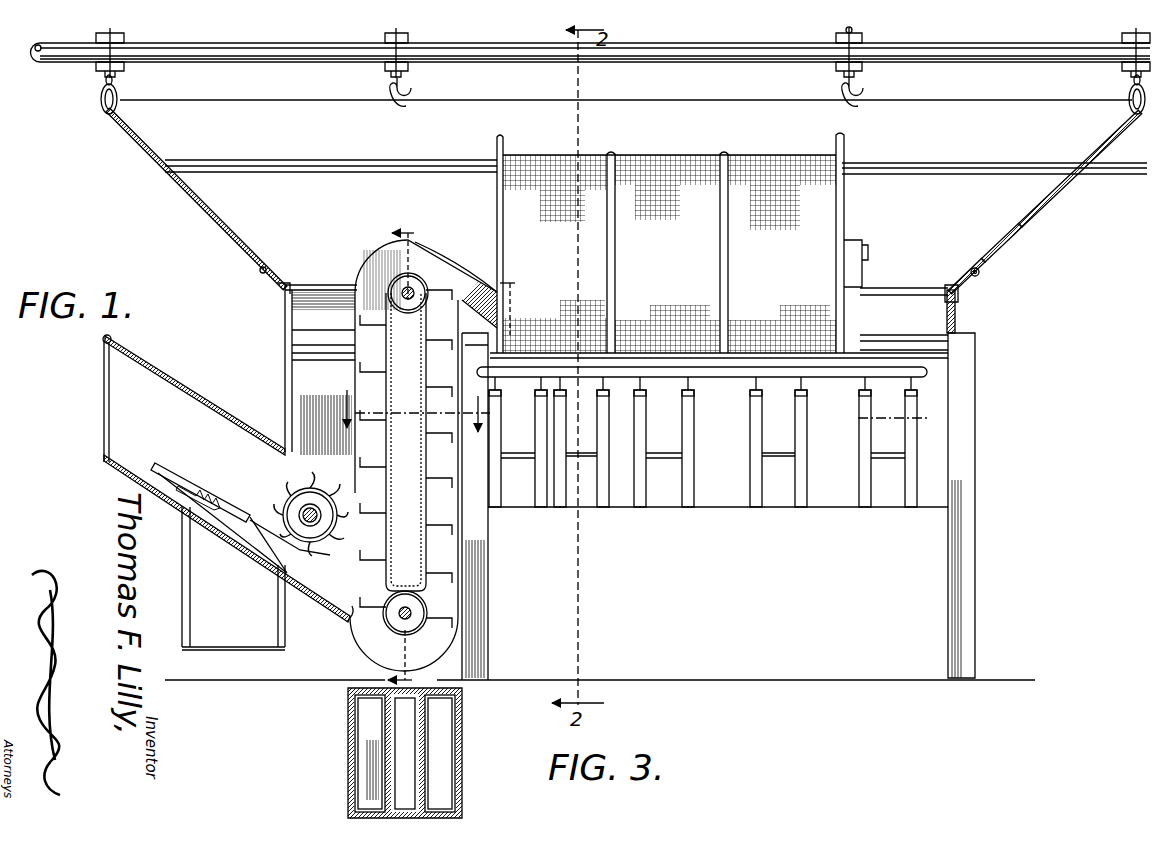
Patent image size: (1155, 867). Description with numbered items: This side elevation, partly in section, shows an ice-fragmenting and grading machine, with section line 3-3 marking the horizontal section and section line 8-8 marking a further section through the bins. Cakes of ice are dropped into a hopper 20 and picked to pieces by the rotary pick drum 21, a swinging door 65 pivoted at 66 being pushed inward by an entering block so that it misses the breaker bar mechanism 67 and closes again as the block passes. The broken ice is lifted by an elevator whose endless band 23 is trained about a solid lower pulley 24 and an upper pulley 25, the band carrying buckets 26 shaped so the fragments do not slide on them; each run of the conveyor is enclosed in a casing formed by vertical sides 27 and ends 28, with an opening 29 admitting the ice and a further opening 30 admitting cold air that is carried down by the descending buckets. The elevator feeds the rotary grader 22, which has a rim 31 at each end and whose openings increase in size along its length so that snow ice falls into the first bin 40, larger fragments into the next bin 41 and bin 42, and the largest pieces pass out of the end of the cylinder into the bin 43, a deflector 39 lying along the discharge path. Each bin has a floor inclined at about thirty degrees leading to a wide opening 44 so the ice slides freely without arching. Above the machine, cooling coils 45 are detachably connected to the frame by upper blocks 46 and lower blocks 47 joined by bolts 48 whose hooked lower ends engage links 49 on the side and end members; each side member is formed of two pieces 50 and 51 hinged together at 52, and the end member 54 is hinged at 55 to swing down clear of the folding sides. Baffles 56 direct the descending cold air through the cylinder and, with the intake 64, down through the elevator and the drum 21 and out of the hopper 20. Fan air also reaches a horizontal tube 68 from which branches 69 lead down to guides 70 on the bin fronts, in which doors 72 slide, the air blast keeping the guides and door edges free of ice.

In FIG. 1, the section line 3- 3 is at (408, 402).
In FIG. 1, the section line 8- 8 is at (893, 410).
In FIG. 1, the hopper 20 is at (166, 496).
In FIG. 1, the rotary pick drum 21 is at (296, 506).
In FIG. 1, the grader 22 is at (655, 158).
In FIG. 1, the band 23 is at (430, 552).
In FIG. 3, the band 23 is at (450, 786).
In FIG. 1, the lower pulley 24 is at (412, 632).
In FIG. 1, the pulley 25 is at (378, 244).
In FIG. 1, the buckets 26 is at (372, 600).
In FIG. 3, the buckets 26 is at (436, 764).
In FIG. 1, the vertical sides 27 is at (490, 412).
In FIG. 3, the vertical sides 27 is at (368, 740).
In FIG. 1, the ends 28 is at (370, 397).
In FIG. 3, the ends 28 is at (420, 690).
In FIG. 1, the opening 29 is at (360, 472).
In FIG. 1, the opening 30 is at (440, 258).
In FIG. 1, the rim 31 is at (496, 140).
In FIG. 1, the deflector 39 is at (512, 292).
In FIG. 1, the first bin 40 is at (545, 507).
In FIG. 1, the bin 41 is at (705, 505).
In FIG. 1, the bin 42 is at (815, 507).
In FIG. 1, the bin 43 is at (862, 505).
In FIG. 1, the wide opening 44 is at (662, 507).
In FIG. 1, the cooling coils 45 is at (648, 56).
In FIG. 1, the upper blocks 46 is at (866, 42).
In FIG. 1, the lower blocks 47 is at (840, 70).
In FIG. 1, the bolts 48 is at (386, 70).
In FIG. 1, the links 49 is at (414, 98).
In FIG. 1, the side member piece 50 is at (1086, 134).
In FIG. 1, the side member piece 51 is at (990, 232).
In FIG. 1, the hinge 52 is at (1040, 172).
In FIG. 1, the end member 54 is at (1002, 218).
In FIG. 1, the hinge 55 is at (978, 276).
In FIG. 1, the baffles 56 is at (283, 312).
In FIG. 1, the intake 64 is at (320, 300).
In FIG. 1, the swinging door 65 is at (104, 404).
In FIG. 1, the pivot 66 is at (104, 342).
In FIG. 1, the breaker bar mechanism 67 is at (180, 470).
In FIG. 1, the horizontal tube 68 is at (930, 374).
In FIG. 1, the branches 69 is at (758, 380).
In FIG. 1, the guides 70 is at (920, 450).
In FIG. 1, the doors 72 is at (884, 470).